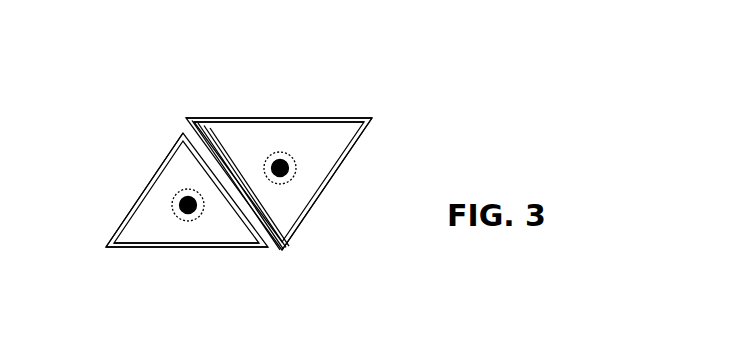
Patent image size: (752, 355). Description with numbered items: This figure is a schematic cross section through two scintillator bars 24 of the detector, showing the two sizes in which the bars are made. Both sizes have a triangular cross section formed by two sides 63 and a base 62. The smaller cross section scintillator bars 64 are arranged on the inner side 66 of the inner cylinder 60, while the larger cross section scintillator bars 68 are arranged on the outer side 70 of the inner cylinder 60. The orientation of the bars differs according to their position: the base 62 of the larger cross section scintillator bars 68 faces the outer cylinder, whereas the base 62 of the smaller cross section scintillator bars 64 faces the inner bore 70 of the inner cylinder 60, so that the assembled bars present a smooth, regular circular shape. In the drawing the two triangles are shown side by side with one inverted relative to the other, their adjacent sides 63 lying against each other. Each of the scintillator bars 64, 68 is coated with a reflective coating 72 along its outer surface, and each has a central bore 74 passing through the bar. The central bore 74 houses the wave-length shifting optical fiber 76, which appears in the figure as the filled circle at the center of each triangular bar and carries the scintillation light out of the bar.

The inner cylinder 60 is at (396, 58).
The base 62 is at (243, 117).
The sides 63 is at (175, 167).
The smaller cross section scintillator bars 64 is at (102, 212).
The inner side 66 is at (153, 168).
The larger cross section scintillator bars 68 is at (384, 136).
The outer side 70 is at (297, 233).
The reflective coating 72 is at (327, 181).
The central bore 74 is at (296, 166).
The wave-length shifting optical fiber 76 is at (285, 152).
The scintillator bars 24 is at (340, 131).